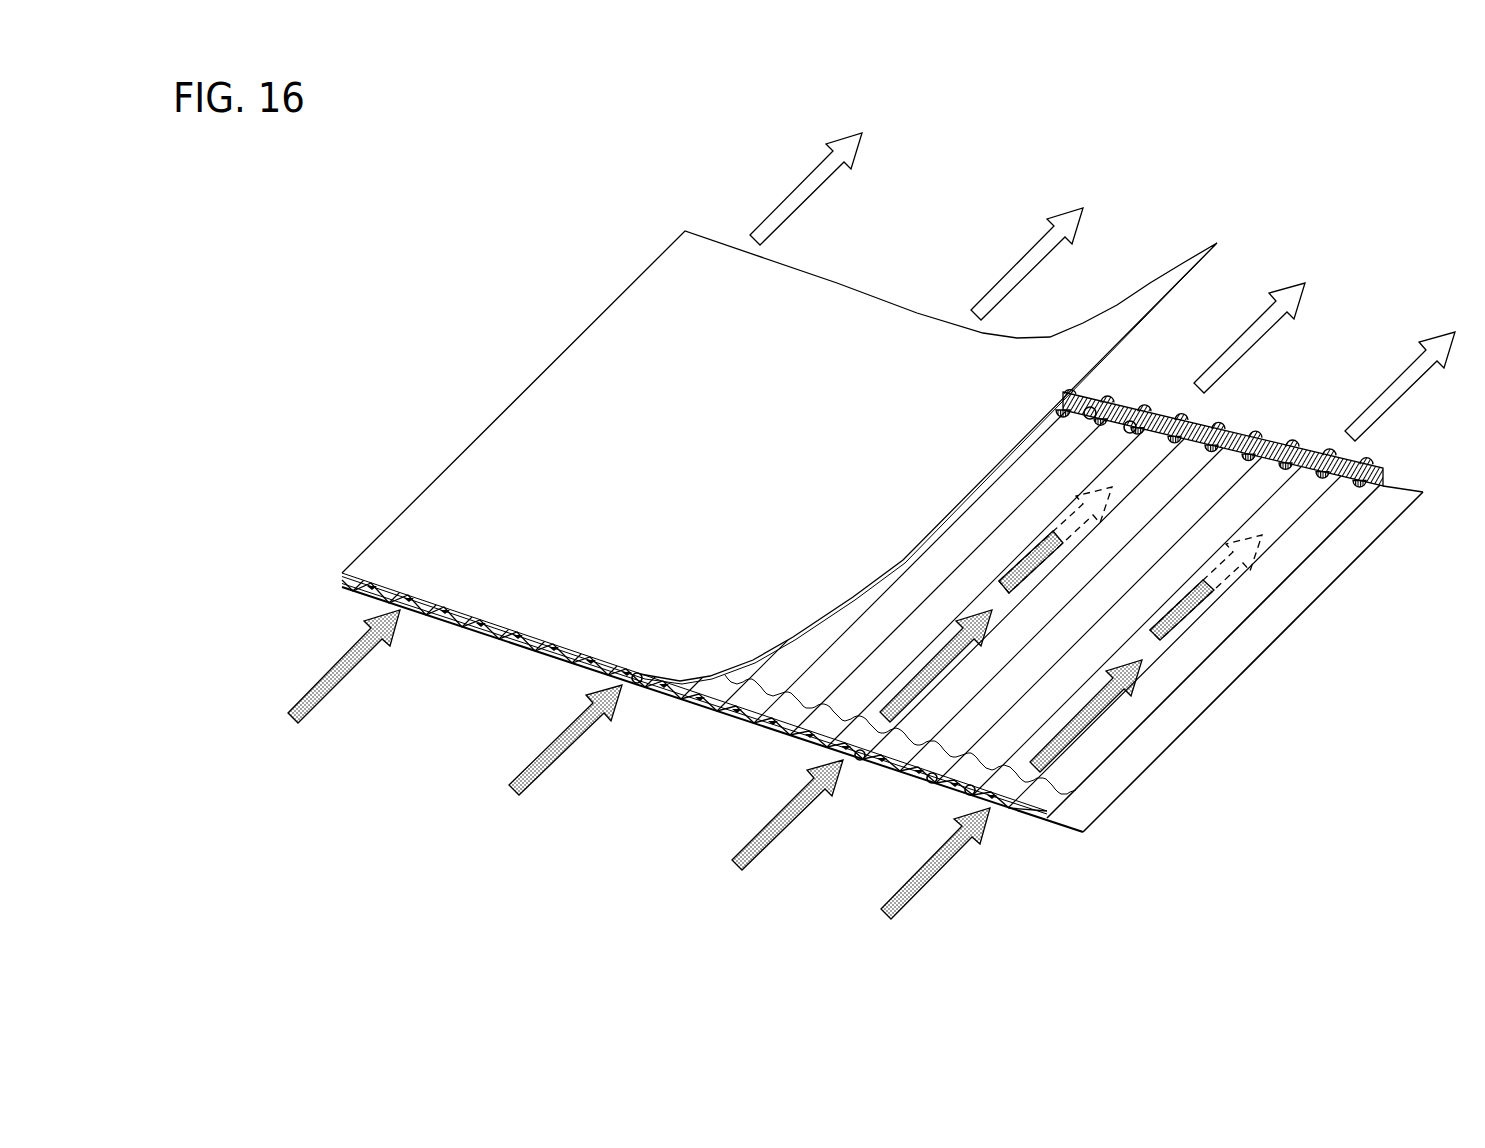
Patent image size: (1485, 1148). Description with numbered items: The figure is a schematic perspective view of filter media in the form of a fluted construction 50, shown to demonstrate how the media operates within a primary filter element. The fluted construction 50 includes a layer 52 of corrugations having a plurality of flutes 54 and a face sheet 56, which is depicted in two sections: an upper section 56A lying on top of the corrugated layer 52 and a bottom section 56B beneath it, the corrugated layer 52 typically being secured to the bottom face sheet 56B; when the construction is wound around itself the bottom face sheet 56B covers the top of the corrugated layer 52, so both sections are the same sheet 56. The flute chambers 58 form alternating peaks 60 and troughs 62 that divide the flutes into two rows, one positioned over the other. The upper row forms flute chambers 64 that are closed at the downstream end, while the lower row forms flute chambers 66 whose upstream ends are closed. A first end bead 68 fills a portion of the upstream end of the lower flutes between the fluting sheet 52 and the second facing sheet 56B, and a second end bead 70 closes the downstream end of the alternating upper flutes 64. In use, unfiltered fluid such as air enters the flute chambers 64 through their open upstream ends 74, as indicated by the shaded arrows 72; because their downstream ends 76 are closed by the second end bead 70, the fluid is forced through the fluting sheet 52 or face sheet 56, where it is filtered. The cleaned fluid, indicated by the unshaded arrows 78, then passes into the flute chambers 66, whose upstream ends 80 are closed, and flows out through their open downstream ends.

The fluted construction 50 is at (600, 171).
The layer of corrugations 52 is at (1295, 565).
The flutes 54 is at (1223, 468).
The face sheet 56 is at (861, 539).
The upper face sheet section 56A is at (838, 283).
The bottom face sheet section 56B is at (1065, 830).
The flute chambers 58 is at (907, 772).
The peaks 60 is at (728, 703).
The troughs 62 is at (673, 700).
The upper flute chambers 64 is at (1310, 510).
The lower flute chambers 66 is at (1223, 412).
The first end bead 68 is at (463, 627).
The second end bead 70 is at (1270, 443).
The shaded arrows 72 is at (293, 717).
The upstream ends 74 is at (563, 653).
The downstream ends 76 is at (1113, 407).
The unshaded arrow 78 is at (1018, 262).
The upstream ends 80 is at (355, 590).